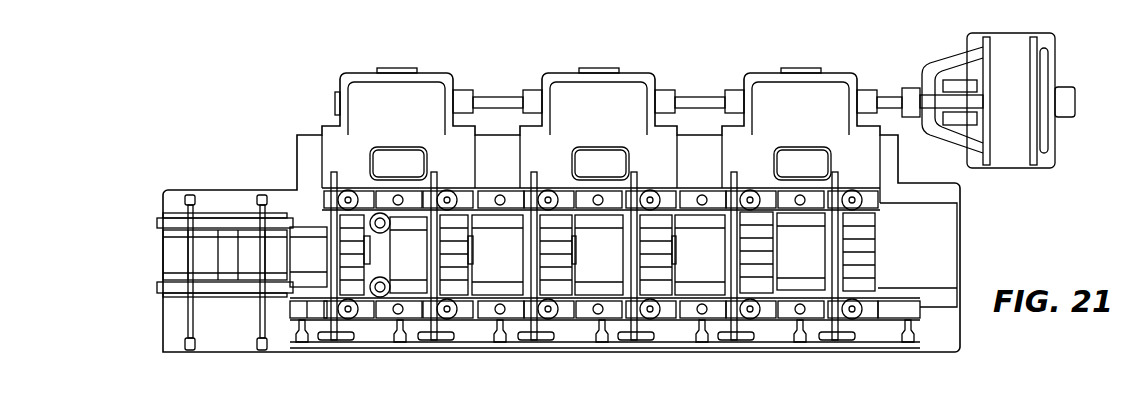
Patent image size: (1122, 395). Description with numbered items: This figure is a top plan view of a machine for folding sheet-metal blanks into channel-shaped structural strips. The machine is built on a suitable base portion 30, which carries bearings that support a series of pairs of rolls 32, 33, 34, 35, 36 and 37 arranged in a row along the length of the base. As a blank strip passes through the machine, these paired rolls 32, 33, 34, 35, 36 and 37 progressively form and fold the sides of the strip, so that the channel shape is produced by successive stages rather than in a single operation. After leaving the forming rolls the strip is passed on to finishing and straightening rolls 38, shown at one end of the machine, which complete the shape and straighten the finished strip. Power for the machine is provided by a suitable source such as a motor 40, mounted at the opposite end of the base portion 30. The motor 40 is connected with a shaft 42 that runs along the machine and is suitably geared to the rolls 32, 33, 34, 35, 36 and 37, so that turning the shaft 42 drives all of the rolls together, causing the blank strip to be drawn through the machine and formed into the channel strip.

The base portion 30 is at (940, 340).
The pair of rolls 32 is at (860, 240).
The pair of rolls 33 is at (767, 245).
The pair of rolls 34 is at (660, 260).
The pair of rolls 35 is at (563, 260).
The pair of rolls 36 is at (455, 260).
The pair of rolls 37 is at (362, 260).
The finishing and straightening rolls 38 is at (173, 253).
The motor 40 is at (1012, 153).
The shaft 42 is at (712, 84).